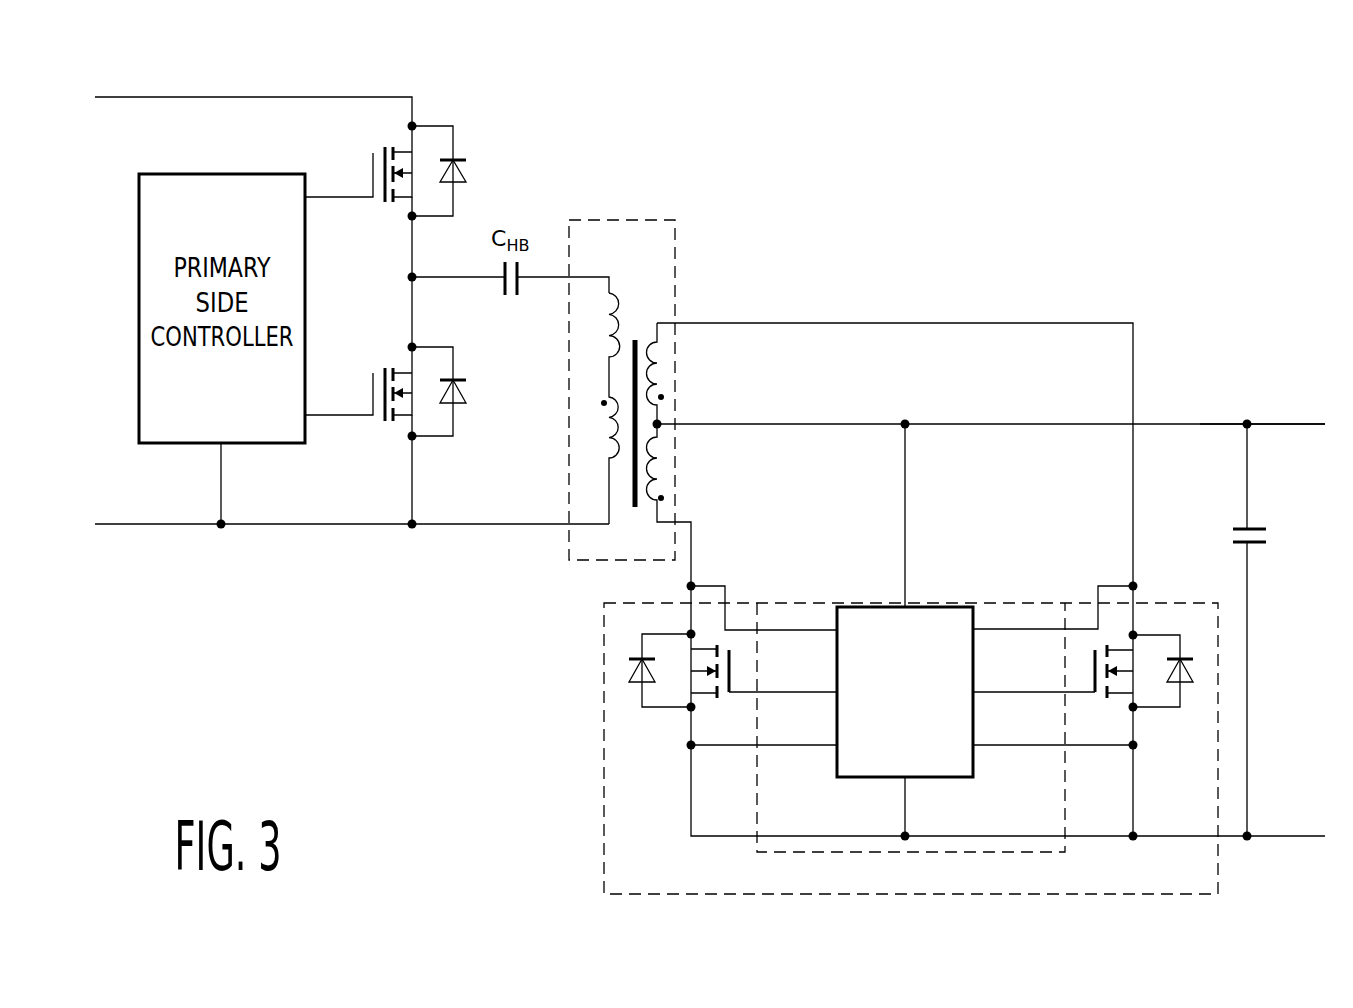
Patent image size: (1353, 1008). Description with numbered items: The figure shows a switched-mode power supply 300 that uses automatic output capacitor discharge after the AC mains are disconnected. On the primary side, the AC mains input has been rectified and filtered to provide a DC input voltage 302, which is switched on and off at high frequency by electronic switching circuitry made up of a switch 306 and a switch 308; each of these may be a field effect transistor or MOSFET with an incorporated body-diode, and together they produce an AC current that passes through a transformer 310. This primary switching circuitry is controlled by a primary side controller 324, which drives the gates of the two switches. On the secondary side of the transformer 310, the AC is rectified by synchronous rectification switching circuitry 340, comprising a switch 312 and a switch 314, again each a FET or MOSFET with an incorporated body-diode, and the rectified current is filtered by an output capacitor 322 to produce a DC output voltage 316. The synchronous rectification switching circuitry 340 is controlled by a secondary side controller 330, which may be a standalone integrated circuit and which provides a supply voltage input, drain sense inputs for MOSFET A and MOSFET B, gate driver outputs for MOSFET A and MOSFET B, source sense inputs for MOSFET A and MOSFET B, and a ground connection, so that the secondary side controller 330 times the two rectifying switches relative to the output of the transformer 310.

The switched-mode power supply 300 is at (1203, 132).
The DC voltage Vin 302 is at (244, 97).
The switch 306 is at (466, 172).
The switch 308 is at (458, 405).
The transformer 310 is at (662, 220).
The switch 312 is at (631, 666).
The switch 314 is at (1193, 683).
The DC output voltage Vout 316 is at (1288, 390).
The output capacitor Cout 322 is at (1258, 546).
The primary side controller 324 is at (133, 524).
The secondary side controller 330 is at (955, 605).
The synchronous rectification switching circuitry 340 is at (604, 768).